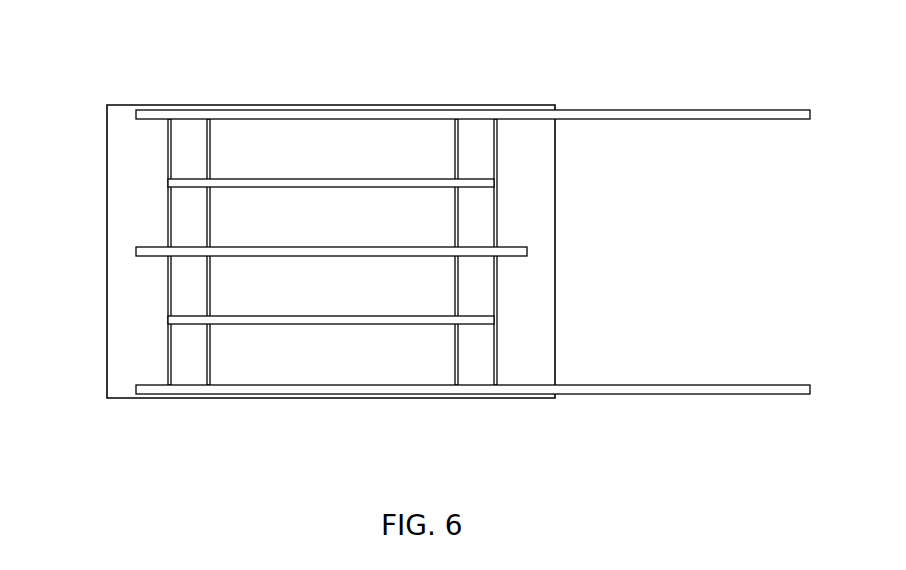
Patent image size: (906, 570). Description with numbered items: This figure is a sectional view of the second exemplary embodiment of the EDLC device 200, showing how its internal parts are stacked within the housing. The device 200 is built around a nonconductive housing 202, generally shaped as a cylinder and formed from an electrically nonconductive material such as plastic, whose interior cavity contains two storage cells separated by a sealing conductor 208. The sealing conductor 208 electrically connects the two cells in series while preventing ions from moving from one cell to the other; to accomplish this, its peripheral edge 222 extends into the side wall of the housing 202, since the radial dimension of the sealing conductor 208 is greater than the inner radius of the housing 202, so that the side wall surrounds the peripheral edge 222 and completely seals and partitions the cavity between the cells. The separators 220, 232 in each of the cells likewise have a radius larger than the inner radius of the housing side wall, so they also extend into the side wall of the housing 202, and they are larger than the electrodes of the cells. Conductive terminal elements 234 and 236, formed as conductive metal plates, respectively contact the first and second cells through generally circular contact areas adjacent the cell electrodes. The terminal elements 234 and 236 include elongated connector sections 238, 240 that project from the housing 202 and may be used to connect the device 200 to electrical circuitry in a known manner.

The EDLC device 200 is at (593, 53).
The nonconductive housing 202 is at (556, 297).
The sealing conductor 208 is at (166, 257).
The separator 220 is at (330, 324).
The peripheral edge 222 is at (520, 247).
The separator 232 is at (374, 182).
The conductive terminal element 234 is at (504, 394).
The conductive terminal element 236 is at (518, 113).
The elongated connector section 238 is at (746, 385).
The elongated connector section 240 is at (750, 110).